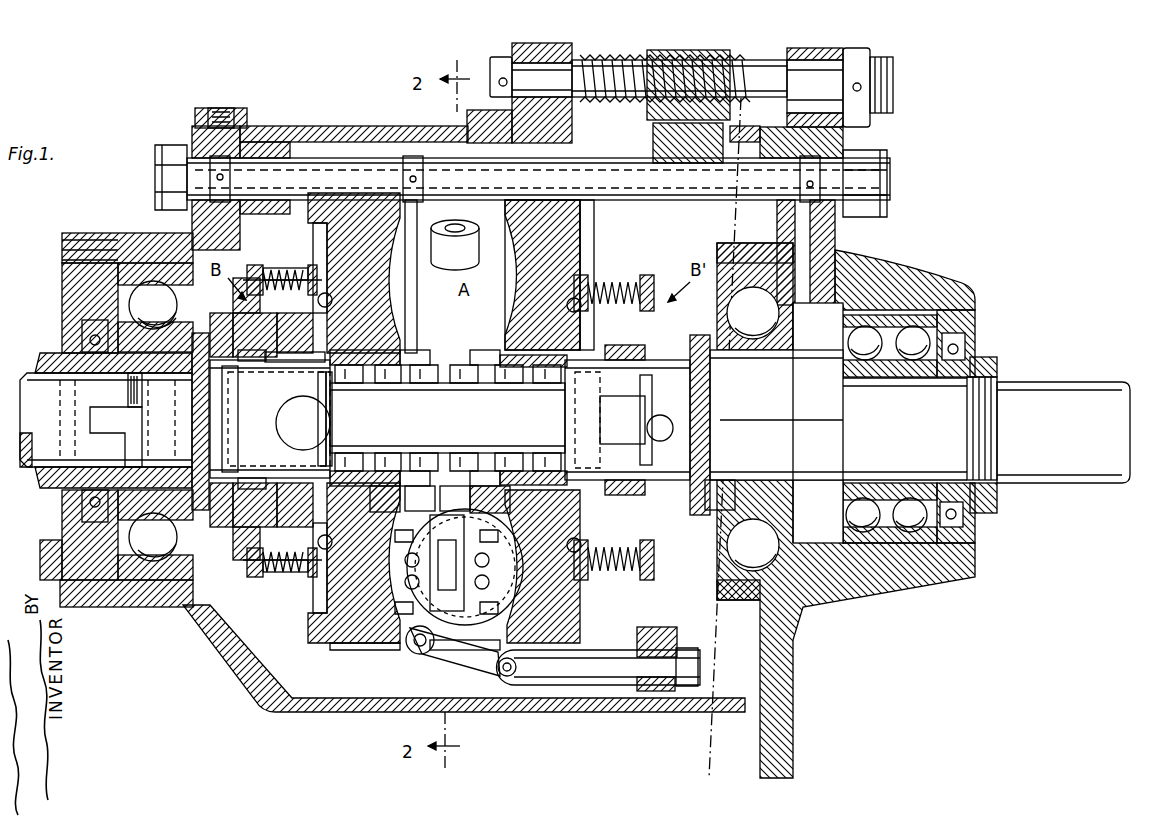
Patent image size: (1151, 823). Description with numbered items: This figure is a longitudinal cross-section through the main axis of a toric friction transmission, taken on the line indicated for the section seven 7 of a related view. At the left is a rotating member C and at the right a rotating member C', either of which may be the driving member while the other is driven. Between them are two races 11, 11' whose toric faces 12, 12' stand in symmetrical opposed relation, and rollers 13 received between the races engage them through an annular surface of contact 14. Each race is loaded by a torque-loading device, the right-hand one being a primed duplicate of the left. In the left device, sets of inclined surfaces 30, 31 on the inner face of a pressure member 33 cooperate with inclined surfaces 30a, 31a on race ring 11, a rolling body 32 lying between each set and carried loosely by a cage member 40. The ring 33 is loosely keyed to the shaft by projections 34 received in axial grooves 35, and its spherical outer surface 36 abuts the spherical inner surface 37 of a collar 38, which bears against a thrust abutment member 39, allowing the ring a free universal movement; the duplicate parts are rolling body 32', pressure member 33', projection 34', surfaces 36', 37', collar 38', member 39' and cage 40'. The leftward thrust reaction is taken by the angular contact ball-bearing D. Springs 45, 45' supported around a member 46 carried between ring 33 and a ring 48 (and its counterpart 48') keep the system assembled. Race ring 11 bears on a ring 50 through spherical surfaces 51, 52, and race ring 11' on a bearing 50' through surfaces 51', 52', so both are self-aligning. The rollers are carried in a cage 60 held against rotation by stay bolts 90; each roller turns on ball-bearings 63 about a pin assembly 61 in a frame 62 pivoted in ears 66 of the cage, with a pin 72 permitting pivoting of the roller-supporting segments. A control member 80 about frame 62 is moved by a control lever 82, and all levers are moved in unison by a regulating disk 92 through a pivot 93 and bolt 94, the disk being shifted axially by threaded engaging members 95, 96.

The section line 7 is at (735, 118).
The race 11 is at (522, 183).
The race 11' is at (548, 260).
The toric face 12 is at (383, 430).
The toric face 12' is at (531, 421).
The roller 13 is at (375, 642).
The annular surface of contact 14 is at (318, 585).
The inclined surface 30 is at (270, 419).
The inclined surface 30a is at (322, 398).
The inclined surface 31 is at (242, 419).
The inclined surface 31a is at (350, 419).
The rolling body 32 is at (350, 419).
The rolling body 32' is at (657, 450).
The pressure member 33 is at (260, 525).
The pressure member 33' is at (722, 570).
The projection 34 is at (252, 419).
The projection 34' is at (655, 420).
The axial groove 35 is at (278, 364).
The outer surface 36 is at (217, 317).
The outer surface 36' is at (722, 419).
The inner surface 37 is at (259, 317).
The inner surface 37' is at (658, 427).
The collar 38 is at (214, 515).
The collar 38' is at (711, 514).
The thrust abutment member 39 is at (182, 421).
The thrust abutment member 39' is at (725, 425).
The cage member 40 is at (299, 419).
The cage member 40' is at (595, 424).
The spring 45 is at (282, 432).
The spring 45' is at (614, 430).
The spring support member 46 is at (296, 266).
The ring 48 is at (307, 260).
The ring 48' is at (603, 275).
The ring 50 is at (372, 418).
The bearing 50' is at (525, 397).
The spherical contacting surface 51 is at (401, 380).
The spherical surface 51' is at (492, 385).
The spherical contacting surface 52 is at (406, 418).
The spherical surface 52' is at (528, 418).
The cage 60 is at (415, 335).
The pin assembly 61 is at (455, 488).
The frame 62 is at (420, 488).
The ball-bearing 63 is at (465, 564).
The ear 66 is at (470, 250).
The pin 72 is at (478, 612).
The control member 80 is at (444, 646).
The control lever 82 is at (448, 654).
The stay bolt 90 is at (493, 186).
The regulating disk 92 is at (670, 628).
The pivot 93 is at (503, 680).
The bolt 94 is at (572, 688).
The threaded engaging member 95 is at (652, 58).
The threaded engaging member 96 is at (706, 99).
The rotating member C is at (106, 420).
The rotating member C' is at (986, 409).
The angular contact ball-bearing D is at (128, 600).